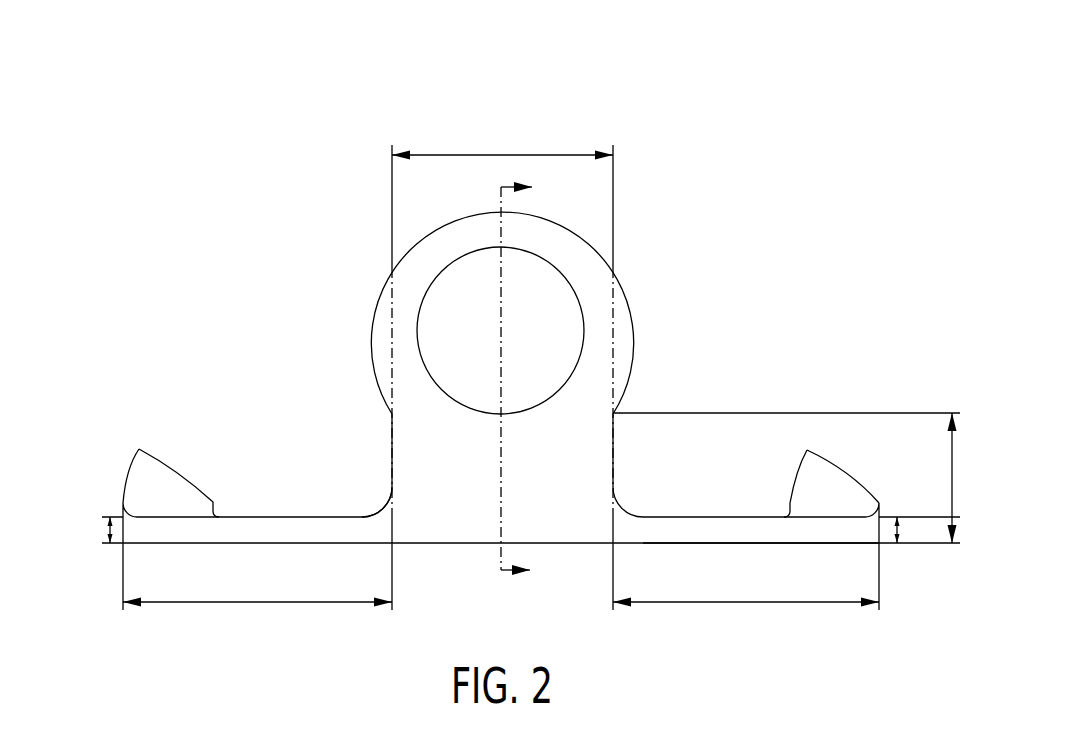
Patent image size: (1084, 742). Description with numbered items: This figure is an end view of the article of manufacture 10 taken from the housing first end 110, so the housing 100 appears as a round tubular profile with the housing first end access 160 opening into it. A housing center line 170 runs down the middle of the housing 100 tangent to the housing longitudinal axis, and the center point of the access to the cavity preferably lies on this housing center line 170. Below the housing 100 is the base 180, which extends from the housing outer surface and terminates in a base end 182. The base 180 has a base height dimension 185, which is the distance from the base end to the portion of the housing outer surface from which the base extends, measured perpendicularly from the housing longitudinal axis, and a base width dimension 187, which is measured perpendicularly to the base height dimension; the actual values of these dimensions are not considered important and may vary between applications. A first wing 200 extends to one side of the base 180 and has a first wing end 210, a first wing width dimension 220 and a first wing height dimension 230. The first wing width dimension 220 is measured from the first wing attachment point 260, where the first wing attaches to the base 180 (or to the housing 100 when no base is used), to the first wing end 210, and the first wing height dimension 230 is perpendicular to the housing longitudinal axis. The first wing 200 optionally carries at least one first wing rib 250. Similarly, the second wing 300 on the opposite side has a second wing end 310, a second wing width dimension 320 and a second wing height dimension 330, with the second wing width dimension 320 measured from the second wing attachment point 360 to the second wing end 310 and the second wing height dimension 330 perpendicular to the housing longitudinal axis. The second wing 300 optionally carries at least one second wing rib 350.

The article of manufacture 10 is at (447, 113).
The housing 100 is at (632, 323).
The housing first end 110 is at (408, 365).
The housing first end access 160 is at (548, 278).
The housing center line 170 is at (495, 202).
The base end 182 is at (512, 542).
The base width dimension 187 is at (561, 155).
The base 180 is at (407, 465).
The second wing attachment point 360 is at (393, 502).
The first wing attachment point 260 is at (610, 507).
The second wing 300 is at (283, 517).
The second wing end 310 is at (123, 528).
The second wing rib 350 is at (171, 468).
The second wing height dimension 330 is at (107, 528).
The second wing width dimension 320 is at (303, 602).
The first wing 200 is at (720, 517).
The first wing rib 250 is at (831, 469).
The first wing end 210 is at (878, 528).
The first wing height dimension 230 is at (897, 530).
The base height dimension 185 is at (952, 463).
The first wing width dimension 220 is at (738, 602).